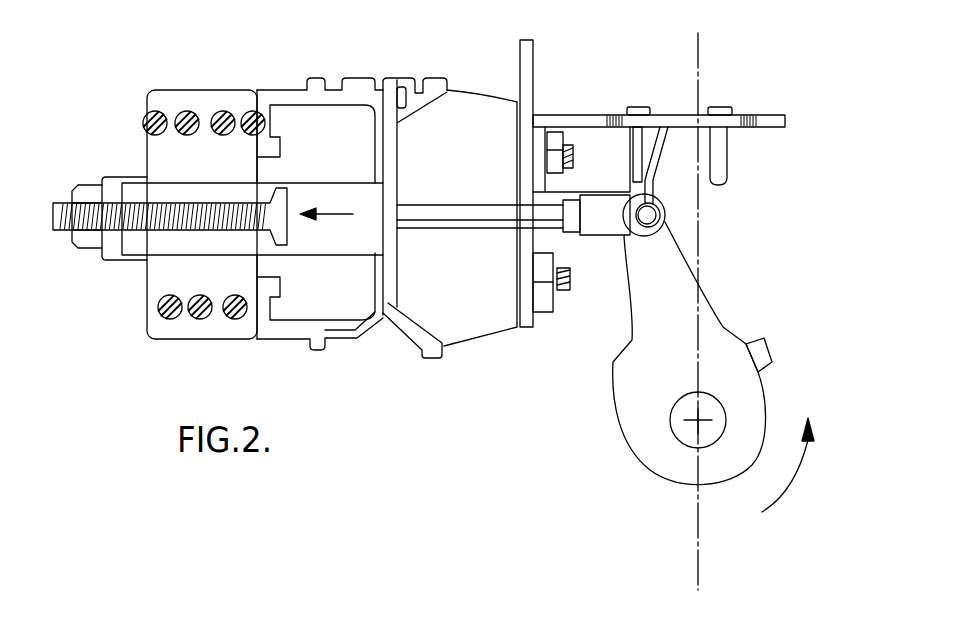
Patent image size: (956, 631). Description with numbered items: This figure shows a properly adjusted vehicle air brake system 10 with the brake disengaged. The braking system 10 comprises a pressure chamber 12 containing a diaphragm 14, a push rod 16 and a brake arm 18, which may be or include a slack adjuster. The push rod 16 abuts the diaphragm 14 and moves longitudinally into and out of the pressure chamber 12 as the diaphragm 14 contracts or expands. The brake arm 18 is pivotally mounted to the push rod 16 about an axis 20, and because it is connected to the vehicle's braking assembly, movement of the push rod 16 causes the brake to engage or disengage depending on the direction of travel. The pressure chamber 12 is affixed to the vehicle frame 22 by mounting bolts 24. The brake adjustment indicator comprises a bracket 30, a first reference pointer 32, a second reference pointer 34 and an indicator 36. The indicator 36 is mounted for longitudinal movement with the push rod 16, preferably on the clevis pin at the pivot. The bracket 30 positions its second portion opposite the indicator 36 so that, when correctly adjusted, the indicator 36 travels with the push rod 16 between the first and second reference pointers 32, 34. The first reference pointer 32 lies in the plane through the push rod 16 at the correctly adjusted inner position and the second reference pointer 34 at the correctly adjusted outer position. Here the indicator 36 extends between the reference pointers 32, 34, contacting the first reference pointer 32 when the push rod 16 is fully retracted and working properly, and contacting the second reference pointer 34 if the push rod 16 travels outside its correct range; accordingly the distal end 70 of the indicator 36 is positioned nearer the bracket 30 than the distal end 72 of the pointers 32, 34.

The braking system 10 is at (318, 50).
The pressure chamber 12 is at (393, 68).
The diaphragm 14 is at (357, 340).
The push rod 16 is at (466, 229).
The brake arm 18 is at (717, 347).
The axis 20 is at (667, 219).
The vehicle frame 22 is at (528, 80).
The mounting bolts 24 is at (570, 143).
The bracket 30 is at (770, 113).
The first reference pointer 32 is at (633, 172).
The second reference pointer 34 is at (732, 145).
The indicator 36 is at (655, 182).
The distal end 70 is at (645, 114).
The distal end 72 is at (596, 215).